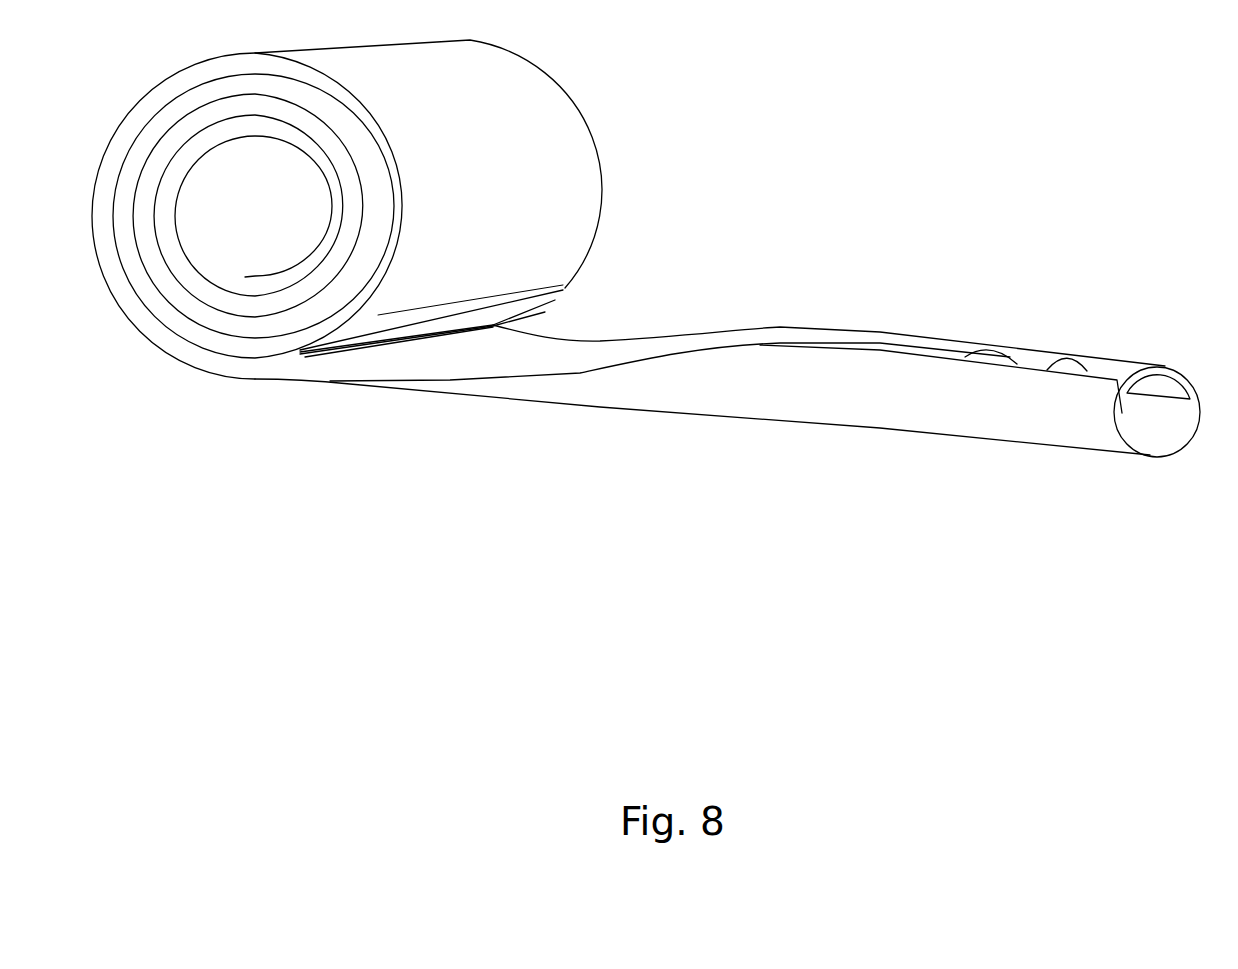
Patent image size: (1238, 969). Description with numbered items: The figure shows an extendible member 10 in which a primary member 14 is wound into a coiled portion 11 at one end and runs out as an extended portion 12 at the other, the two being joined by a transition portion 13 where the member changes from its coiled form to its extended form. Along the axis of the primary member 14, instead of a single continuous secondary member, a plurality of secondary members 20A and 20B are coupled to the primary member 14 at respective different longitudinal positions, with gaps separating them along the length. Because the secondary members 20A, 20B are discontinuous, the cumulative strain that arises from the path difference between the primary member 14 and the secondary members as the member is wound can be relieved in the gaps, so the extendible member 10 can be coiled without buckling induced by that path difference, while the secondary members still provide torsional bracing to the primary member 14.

The extendible member 10 is at (654, 378).
The coiled portion 11 is at (385, 620).
The extended portion 12 is at (1058, 620).
The transition portion 13 is at (705, 620).
The primary member 14 is at (1072, 432).
The secondary member 20A is at (949, 356).
The secondary member 20B is at (1088, 358).